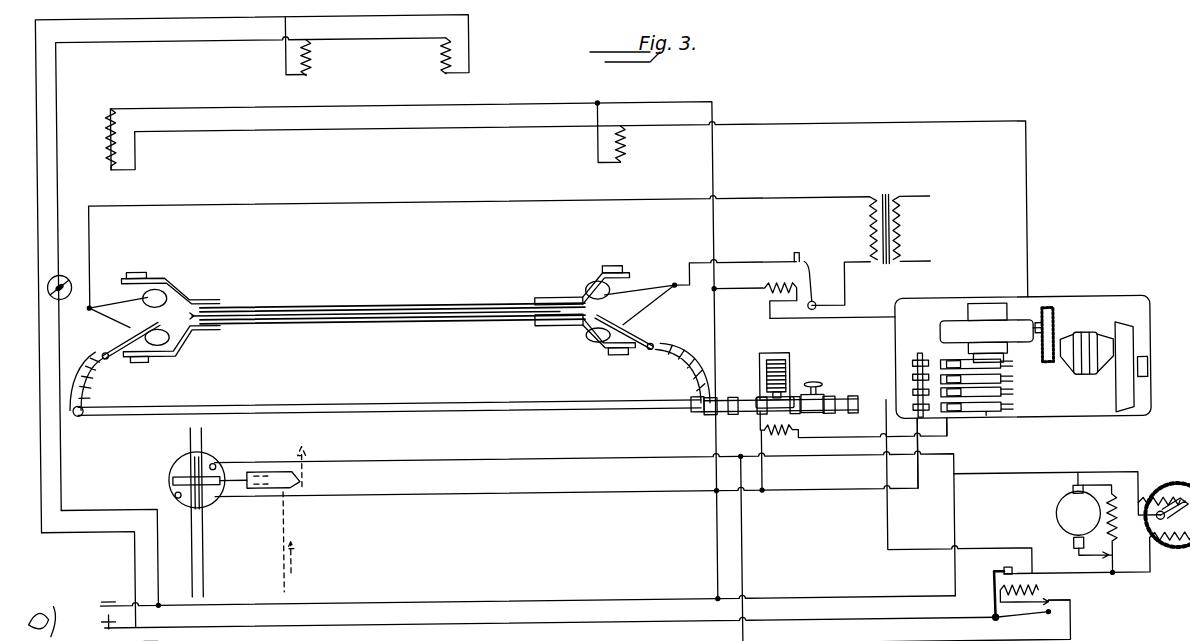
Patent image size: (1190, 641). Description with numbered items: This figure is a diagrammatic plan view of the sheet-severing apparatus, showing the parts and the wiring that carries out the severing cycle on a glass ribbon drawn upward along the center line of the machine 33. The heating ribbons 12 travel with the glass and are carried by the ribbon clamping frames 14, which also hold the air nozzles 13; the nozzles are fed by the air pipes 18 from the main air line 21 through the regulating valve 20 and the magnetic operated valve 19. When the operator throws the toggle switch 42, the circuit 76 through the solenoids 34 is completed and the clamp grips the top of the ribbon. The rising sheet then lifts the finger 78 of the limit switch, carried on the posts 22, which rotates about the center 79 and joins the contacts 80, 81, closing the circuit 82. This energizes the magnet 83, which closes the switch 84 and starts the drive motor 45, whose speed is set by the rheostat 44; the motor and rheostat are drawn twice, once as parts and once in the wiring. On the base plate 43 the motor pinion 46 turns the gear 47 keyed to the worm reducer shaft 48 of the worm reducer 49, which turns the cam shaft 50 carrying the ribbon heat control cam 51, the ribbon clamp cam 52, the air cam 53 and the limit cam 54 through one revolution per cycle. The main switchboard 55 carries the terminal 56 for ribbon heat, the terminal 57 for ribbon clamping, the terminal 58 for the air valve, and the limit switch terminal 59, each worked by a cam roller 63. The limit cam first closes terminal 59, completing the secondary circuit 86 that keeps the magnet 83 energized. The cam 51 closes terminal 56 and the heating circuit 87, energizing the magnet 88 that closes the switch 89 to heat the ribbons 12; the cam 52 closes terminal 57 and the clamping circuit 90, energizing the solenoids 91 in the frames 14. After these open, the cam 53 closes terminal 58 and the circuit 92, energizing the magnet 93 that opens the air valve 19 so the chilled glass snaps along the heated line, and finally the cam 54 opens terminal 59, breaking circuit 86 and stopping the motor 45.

The heating ribbon 12 is at (262, 302).
The air nozzle 13 is at (112, 333).
The ribbon clamping frame 14 is at (137, 267).
The air pipe 18 is at (85, 389).
The magnetic operated valve 19 is at (773, 365).
The regulating valve 20 is at (812, 383).
The main air line 21 is at (838, 416).
The post 22 is at (200, 536).
The center line of the machine 33 is at (487, 308).
The solenoid 34 is at (314, 69).
The toggle switch 42 is at (64, 268).
The base plate 43 is at (1150, 396).
The rheostat 44 is at (1160, 505).
The drive motor 45 is at (1133, 293).
The motor pinion 46 is at (1080, 338).
The gear 47 is at (1042, 325).
The worm reducer shaft 48 is at (1047, 311).
The worm reducer 49 is at (975, 322).
The cam shaft 50 is at (985, 420).
The ribbon heat control cam 51 is at (985, 352).
The ribbon clamp cam 52 is at (1012, 383).
The air cam 53 is at (1012, 396).
The limit cam 54 is at (991, 404).
The main switchboard 55 is at (918, 357).
The terminal 56 is at (912, 366).
The terminal 57 is at (912, 380).
The terminal 58 is at (912, 395).
The limit switch terminal 59 is at (912, 403).
The cam roller 63 is at (964, 405).
The circuit 76 is at (62, 206).
The finger 78 is at (280, 468).
The center 79 is at (190, 474).
The contact 80 is at (215, 460).
The contact 81 is at (172, 489).
The circuit 82 is at (506, 440).
The magnet 83 is at (1040, 592).
The switch 84 is at (1000, 570).
The secondary circuit 86 is at (930, 474).
The heating circuit 87 is at (866, 318).
The magnet 88 is at (766, 295).
The switch 89 is at (803, 258).
The clamping circuit 90 is at (1028, 170).
The solenoid 91 is at (110, 147).
The circuit 92 is at (982, 425).
The magnet 93 is at (776, 434).